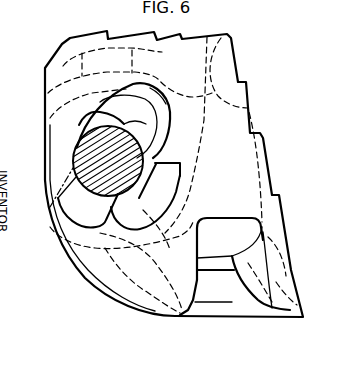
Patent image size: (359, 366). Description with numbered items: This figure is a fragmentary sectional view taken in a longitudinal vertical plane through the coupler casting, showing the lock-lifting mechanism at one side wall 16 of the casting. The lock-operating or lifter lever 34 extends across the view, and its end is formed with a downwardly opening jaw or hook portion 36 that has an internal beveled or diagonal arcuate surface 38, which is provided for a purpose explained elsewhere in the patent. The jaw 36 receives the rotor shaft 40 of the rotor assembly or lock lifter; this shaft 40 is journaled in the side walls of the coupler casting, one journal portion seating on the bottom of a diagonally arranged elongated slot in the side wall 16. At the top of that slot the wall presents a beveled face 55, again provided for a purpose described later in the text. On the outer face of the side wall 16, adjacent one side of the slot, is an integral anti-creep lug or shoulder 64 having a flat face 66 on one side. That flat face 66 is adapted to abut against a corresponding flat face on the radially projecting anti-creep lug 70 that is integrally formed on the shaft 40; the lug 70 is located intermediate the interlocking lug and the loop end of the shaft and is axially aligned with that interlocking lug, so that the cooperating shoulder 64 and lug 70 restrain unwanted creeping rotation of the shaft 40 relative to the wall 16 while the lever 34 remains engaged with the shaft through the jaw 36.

The side wall 16 is at (97, 271).
The lifter lever 34 is at (226, 307).
The jaw portion 36 is at (44, 163).
The beveled arcuate surface 38 is at (85, 113).
The rotor shaft 40 is at (109, 154).
The beveled face 55 is at (157, 95).
The anti-creep shoulder 64 is at (168, 173).
The flat face 66 is at (112, 212).
The anti-creep lug 70 is at (75, 200).